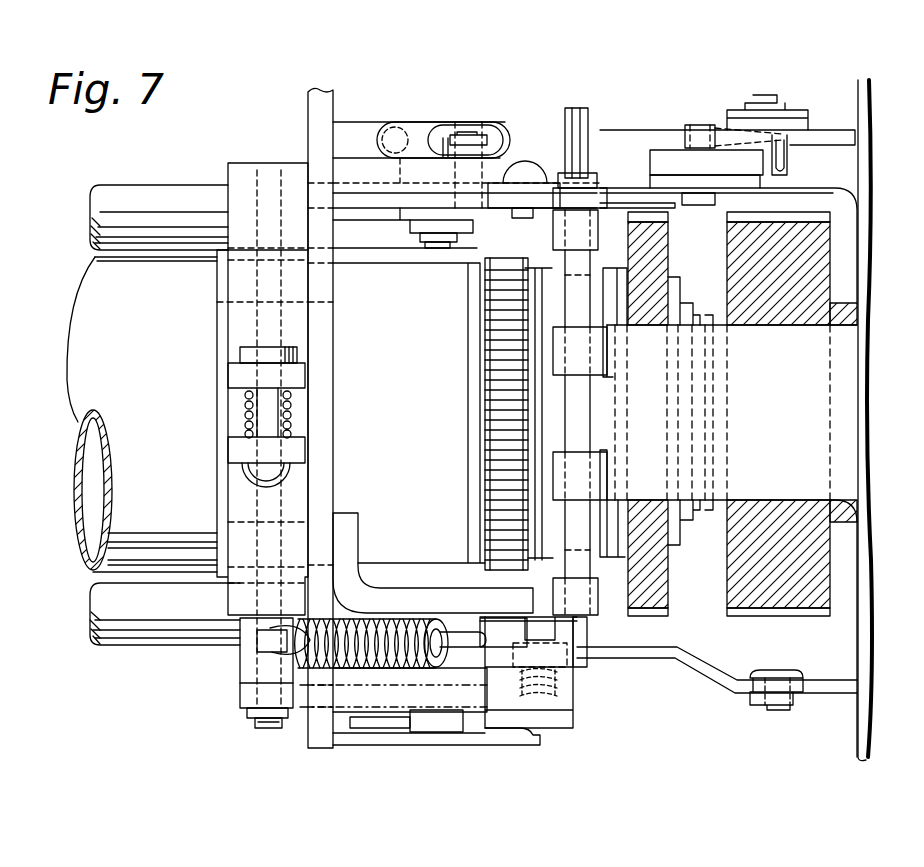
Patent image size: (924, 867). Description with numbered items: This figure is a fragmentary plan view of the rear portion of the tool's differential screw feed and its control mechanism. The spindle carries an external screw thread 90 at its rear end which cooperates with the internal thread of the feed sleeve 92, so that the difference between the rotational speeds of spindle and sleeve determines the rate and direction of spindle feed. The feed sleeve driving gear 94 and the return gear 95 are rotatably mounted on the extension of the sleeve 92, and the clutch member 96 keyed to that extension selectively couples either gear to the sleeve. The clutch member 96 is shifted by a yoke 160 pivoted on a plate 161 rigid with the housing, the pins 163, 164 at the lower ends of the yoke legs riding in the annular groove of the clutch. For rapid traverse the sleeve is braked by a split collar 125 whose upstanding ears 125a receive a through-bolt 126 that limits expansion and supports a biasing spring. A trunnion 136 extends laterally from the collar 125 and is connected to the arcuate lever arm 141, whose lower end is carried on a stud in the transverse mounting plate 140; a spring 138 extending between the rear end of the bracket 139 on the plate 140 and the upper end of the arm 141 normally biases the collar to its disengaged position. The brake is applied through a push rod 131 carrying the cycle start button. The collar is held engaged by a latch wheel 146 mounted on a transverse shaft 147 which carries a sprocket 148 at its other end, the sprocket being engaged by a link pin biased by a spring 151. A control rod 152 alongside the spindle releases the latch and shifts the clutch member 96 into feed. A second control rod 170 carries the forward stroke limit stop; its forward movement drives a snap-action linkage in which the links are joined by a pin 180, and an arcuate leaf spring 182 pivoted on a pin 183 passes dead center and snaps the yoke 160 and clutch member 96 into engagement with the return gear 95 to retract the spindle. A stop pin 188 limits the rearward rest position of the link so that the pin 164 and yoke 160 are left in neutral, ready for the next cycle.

The external screw thread 90 is at (97, 528).
The sleeve 92 is at (92, 398).
The feed sleeve driving gear 94 is at (660, 278).
The return gear 95 is at (493, 275).
The clutch member 96 is at (597, 262).
The collar 125 is at (235, 508).
The ears 125a is at (235, 440).
The through-bolt 126 is at (255, 337).
The push rod 131 is at (658, 652).
The trunnion 136 is at (258, 728).
The spring 138 is at (385, 655).
The bracket 139 is at (347, 543).
The transverse mounting plate 140 is at (308, 150).
The arcuate lever arm 141 is at (245, 660).
The latch wheel 146 is at (563, 722).
The transverse shaft 147 is at (520, 742).
The sprocket 148 is at (492, 620).
The spring 151 is at (573, 688).
The control rod 152 is at (140, 622).
The yoke 160 is at (558, 268).
The plate 161 is at (825, 447).
The pin 163 is at (590, 566).
The pin 164 is at (568, 210).
The second control rod 170 is at (133, 200).
The pin 180 is at (477, 130).
The arcuate leaf spring 182 is at (447, 125).
The pin 183 is at (413, 130).
The stop pin 188 is at (522, 165).